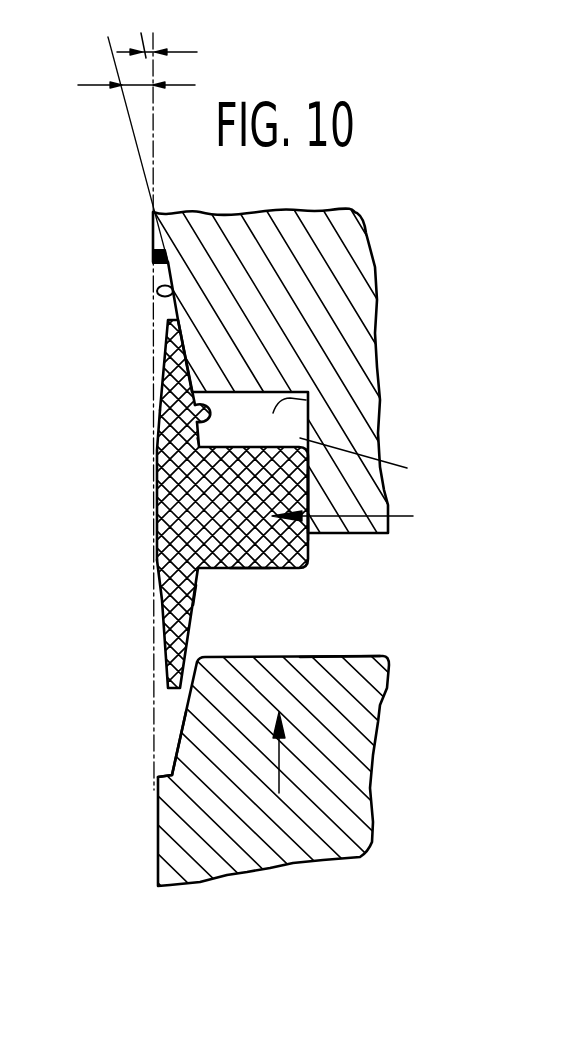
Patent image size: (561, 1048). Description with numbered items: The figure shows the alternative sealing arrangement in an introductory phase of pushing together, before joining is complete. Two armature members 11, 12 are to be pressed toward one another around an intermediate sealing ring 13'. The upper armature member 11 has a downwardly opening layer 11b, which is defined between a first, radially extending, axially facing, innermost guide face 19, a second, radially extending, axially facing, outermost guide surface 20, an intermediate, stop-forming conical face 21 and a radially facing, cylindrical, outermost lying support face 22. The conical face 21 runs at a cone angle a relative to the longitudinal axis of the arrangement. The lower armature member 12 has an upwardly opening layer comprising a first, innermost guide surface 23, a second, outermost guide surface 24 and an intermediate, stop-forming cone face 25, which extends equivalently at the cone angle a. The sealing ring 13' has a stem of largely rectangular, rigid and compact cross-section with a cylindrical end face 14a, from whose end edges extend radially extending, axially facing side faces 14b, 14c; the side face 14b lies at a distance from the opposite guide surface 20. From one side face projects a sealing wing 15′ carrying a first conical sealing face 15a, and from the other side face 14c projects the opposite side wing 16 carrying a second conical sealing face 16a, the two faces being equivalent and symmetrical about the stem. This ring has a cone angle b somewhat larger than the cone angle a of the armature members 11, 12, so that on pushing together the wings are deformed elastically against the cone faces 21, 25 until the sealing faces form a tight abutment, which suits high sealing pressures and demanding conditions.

The armature member 11 is at (243, 232).
The layer 11b is at (293, 422).
The armature member 12 is at (335, 777).
The sealing ring 13' is at (366, 522).
The cylindrical end face 14a is at (310, 546).
The side face 14b is at (218, 440).
The side face 14c is at (253, 572).
The sealing wing 15′ is at (162, 362).
The conical face 15a is at (197, 419).
The side wing 16 is at (167, 670).
The conical face 16a is at (190, 622).
The innermost guide face 19 is at (155, 267).
The outermost guide surface 20 is at (307, 393).
The conical face 21 is at (173, 292).
The support face 22 is at (308, 432).
The innermost guide surface 23 is at (170, 776).
The outermost guide surface 24 is at (350, 676).
The cone face 25 is at (172, 752).
The cone angle a is at (136, 83).
The cone angle b is at (142, 38).